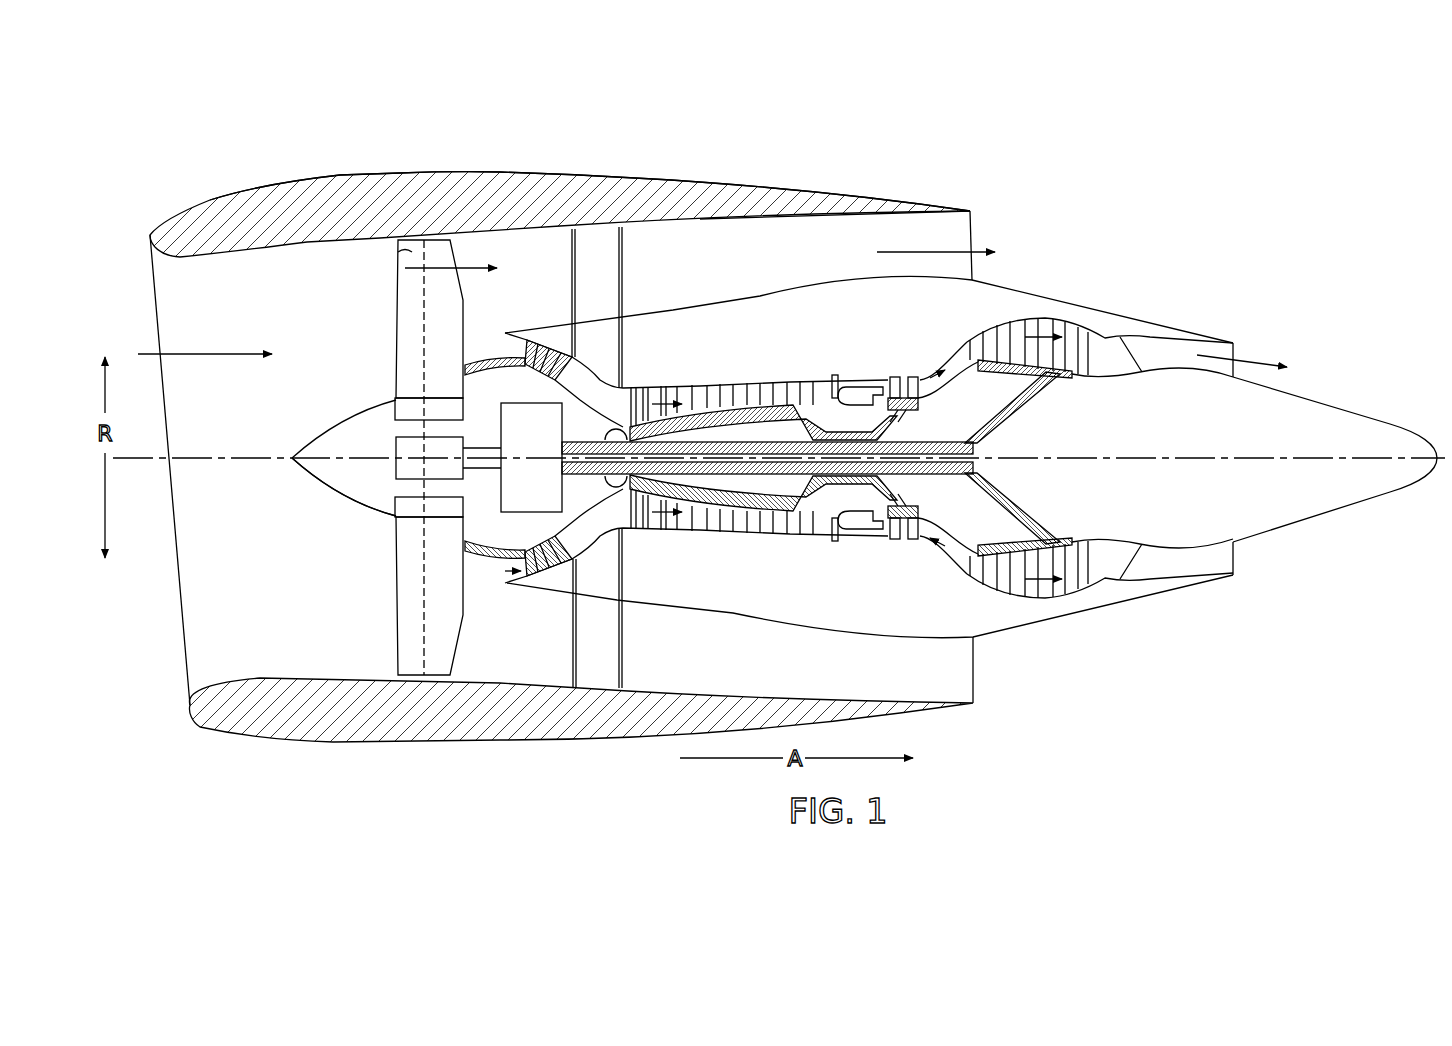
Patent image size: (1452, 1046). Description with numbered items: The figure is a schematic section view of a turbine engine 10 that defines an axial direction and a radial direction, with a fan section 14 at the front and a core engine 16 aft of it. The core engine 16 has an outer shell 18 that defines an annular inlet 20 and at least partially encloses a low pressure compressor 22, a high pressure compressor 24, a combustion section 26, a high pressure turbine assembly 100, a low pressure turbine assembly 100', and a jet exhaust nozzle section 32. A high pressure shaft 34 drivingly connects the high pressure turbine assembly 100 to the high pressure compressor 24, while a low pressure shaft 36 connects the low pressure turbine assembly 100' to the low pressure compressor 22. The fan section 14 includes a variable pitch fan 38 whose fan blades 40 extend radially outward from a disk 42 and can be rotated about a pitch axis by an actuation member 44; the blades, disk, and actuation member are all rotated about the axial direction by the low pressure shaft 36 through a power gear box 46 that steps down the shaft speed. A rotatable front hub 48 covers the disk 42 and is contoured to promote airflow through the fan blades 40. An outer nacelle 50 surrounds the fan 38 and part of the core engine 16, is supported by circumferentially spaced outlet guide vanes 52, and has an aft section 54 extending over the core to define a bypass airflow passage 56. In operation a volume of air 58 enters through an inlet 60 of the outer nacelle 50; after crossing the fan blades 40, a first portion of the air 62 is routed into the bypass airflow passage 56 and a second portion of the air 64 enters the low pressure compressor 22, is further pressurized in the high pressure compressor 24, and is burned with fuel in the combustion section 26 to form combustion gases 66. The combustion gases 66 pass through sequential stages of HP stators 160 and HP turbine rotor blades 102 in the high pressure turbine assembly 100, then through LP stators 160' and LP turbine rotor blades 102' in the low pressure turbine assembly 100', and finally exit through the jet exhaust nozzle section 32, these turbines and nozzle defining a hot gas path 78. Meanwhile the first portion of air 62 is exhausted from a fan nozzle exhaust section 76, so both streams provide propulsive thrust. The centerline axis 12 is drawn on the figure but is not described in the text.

The turbine engine 10 is at (1082, 190).
The longitudinal centerline axis 12 is at (1155, 455).
The fan section 14 is at (333, 236).
The core engine 16 is at (760, 330).
The outer shell 18 is at (728, 613).
The annular inlet 20 is at (507, 580).
The low pressure compressor 22 is at (577, 528).
The high pressure compressor 24 is at (652, 515).
The combustion section 26 is at (853, 528).
The jet exhaust nozzle section 32 is at (1133, 570).
The high pressure shaft 34 is at (875, 427).
The low pressure shaft 36 is at (968, 437).
The variable pitch fan 38 is at (385, 483).
The fan blades 40 is at (395, 620).
The disk 42 is at (398, 408).
The actuation member 44 is at (396, 450).
The power gear box 46 is at (522, 422).
The rotatable front hub 48 is at (300, 473).
The outer nacelle 50 is at (440, 745).
The outlet guide vanes 52 is at (622, 277).
The aft section 54 is at (862, 190).
The bypass airflow passage 56 is at (817, 257).
The volume of air 58 is at (215, 353).
The inlet 60 is at (188, 670).
The first portion of the air 62 is at (905, 252).
The second portion of the air 64 is at (487, 345).
The combustion gases 66 is at (1032, 336).
The fan nozzle exhaust section 76 is at (975, 233).
The hot gas path 78 is at (963, 357).
The high pressure turbine assembly 100 is at (935, 559).
The low pressure turbine assembly 100' is at (1100, 614).
The HP turbine rotor blades 102 is at (929, 512).
The LP turbine rotor blades 102' is at (1025, 600).
The HP stators 160 is at (886, 538).
The LP stators 160' is at (963, 585).